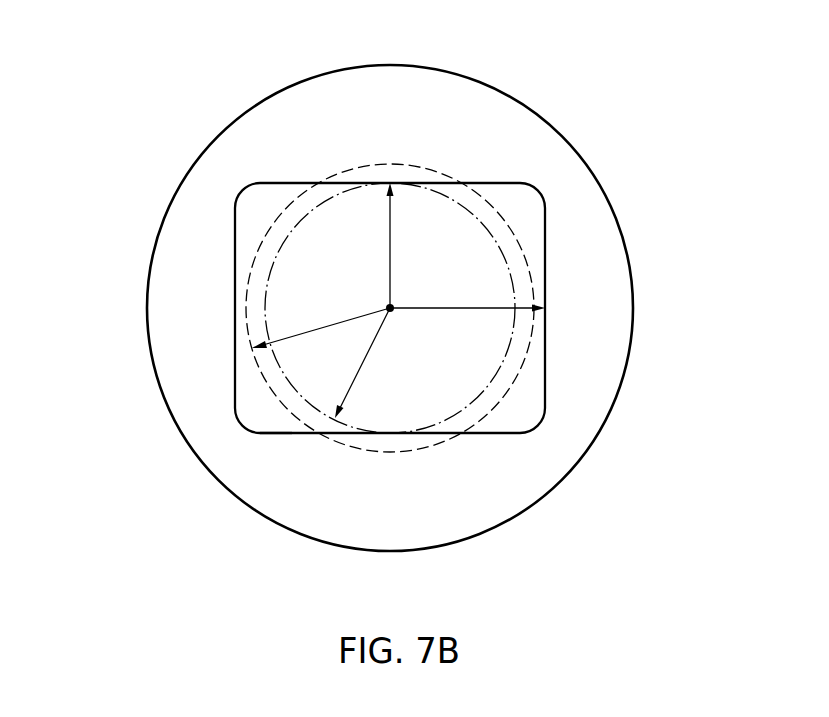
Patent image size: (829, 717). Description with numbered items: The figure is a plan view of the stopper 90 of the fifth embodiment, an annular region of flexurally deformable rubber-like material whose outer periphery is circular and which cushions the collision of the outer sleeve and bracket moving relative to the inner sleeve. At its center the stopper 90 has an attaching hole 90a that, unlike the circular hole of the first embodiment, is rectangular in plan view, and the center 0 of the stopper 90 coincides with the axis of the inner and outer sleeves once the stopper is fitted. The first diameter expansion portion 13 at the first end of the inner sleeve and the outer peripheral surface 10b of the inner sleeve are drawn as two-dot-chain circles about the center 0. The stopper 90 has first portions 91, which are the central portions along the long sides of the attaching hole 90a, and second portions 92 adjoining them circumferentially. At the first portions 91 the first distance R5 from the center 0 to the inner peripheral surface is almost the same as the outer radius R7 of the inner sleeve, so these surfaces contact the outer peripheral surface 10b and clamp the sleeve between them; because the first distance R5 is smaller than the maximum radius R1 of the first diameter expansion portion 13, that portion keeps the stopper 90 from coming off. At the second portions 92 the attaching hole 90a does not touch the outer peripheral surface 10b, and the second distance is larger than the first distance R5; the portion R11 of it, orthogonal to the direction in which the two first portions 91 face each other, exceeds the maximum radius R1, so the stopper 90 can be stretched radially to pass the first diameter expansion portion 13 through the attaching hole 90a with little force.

The stopper 90 is at (622, 143).
The first portions 91 is at (391, 183).
The second portions 92 is at (178, 305).
The first diameter expansion portion 13 is at (527, 352).
The outer peripheral surface 10b is at (492, 402).
The attaching hole 90a is at (292, 433).
The center 0 is at (395, 303).
The first distance R5 is at (389, 263).
The maximum radius of the first diameter expansion portion R1 is at (327, 322).
The outer radius of the inner sleeve R7 is at (361, 365).
The portion of the second distance R11 is at (460, 312).